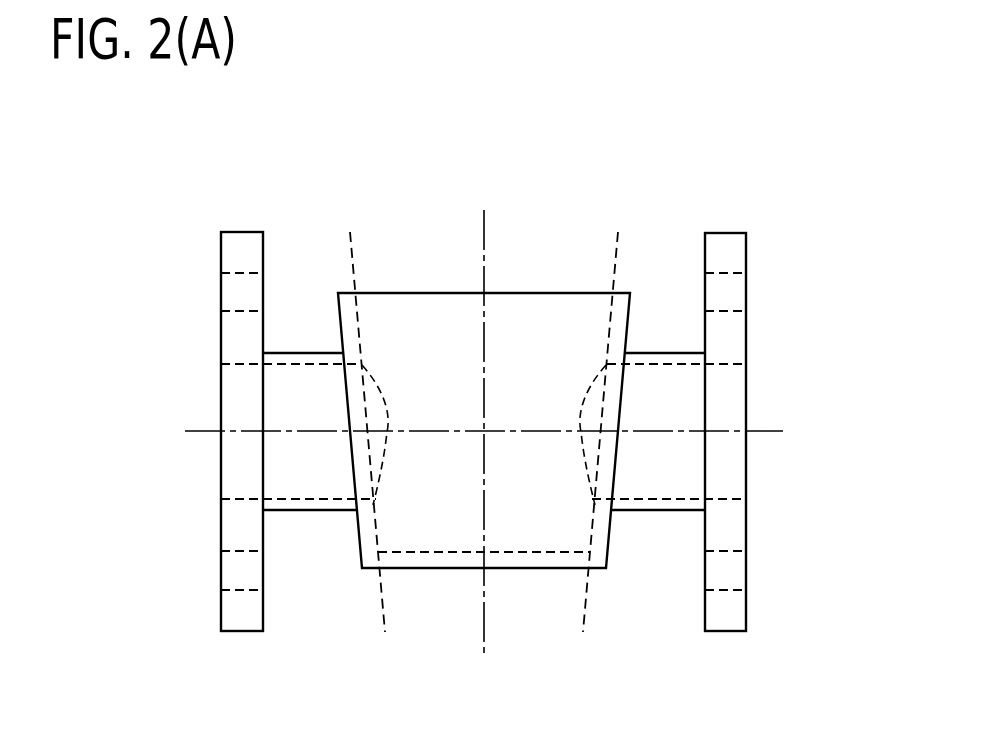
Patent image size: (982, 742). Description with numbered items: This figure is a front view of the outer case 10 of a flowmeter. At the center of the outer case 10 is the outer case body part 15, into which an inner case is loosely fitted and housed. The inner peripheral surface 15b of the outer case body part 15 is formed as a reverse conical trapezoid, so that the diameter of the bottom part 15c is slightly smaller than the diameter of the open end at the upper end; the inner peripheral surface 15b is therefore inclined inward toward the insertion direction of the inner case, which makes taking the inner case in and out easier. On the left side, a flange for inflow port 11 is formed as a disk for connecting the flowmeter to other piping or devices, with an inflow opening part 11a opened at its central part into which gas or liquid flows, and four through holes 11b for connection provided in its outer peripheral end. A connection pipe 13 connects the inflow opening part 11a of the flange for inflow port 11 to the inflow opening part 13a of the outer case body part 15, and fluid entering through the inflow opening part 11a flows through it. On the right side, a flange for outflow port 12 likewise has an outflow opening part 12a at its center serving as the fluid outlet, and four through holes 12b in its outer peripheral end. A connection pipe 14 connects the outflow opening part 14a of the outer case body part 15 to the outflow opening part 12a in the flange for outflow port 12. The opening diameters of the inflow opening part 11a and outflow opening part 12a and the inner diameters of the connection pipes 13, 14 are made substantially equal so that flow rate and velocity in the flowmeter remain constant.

The outer case 10 is at (653, 150).
The flange for inflow port 11 is at (221, 245).
The inflow opening part 11a is at (246, 466).
The through holes for connection 11b is at (246, 274).
The flange for outflow port 12 is at (746, 245).
The outflow opening part 12a is at (727, 466).
The through holes for connection 12b is at (727, 274).
The connection pipe 13 is at (308, 512).
The inflow opening part 13a is at (380, 410).
The connection pipe 14 is at (657, 512).
The outflow opening part 14a is at (588, 410).
The outer case body part 15 is at (548, 293).
The inner peripheral surface 15b is at (362, 335).
The bottom part 15c is at (420, 548).